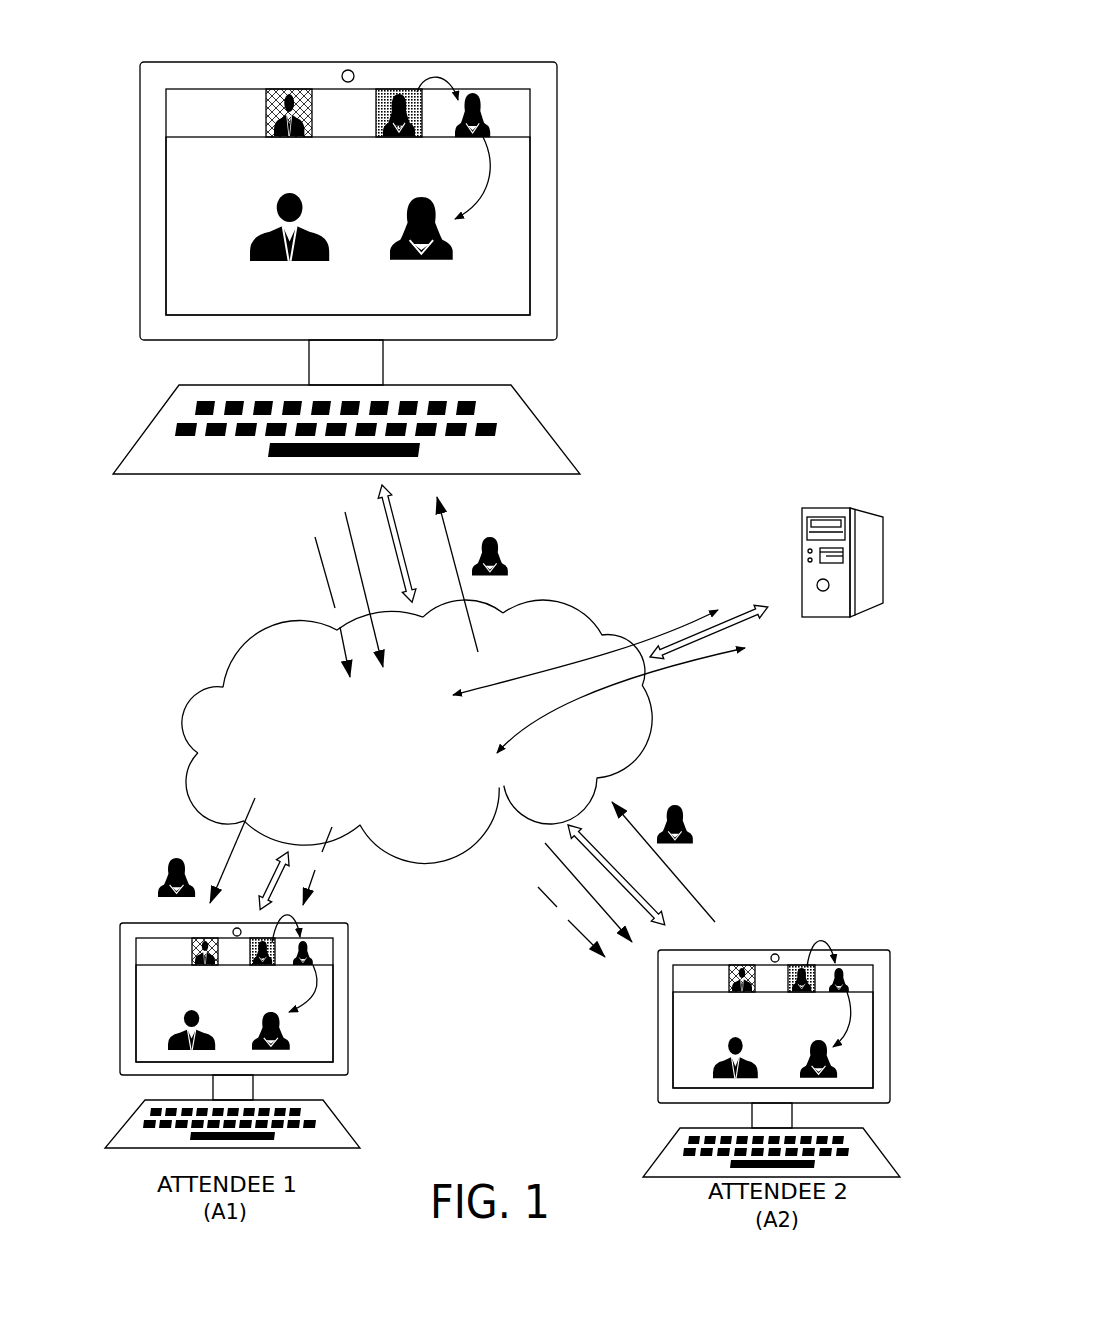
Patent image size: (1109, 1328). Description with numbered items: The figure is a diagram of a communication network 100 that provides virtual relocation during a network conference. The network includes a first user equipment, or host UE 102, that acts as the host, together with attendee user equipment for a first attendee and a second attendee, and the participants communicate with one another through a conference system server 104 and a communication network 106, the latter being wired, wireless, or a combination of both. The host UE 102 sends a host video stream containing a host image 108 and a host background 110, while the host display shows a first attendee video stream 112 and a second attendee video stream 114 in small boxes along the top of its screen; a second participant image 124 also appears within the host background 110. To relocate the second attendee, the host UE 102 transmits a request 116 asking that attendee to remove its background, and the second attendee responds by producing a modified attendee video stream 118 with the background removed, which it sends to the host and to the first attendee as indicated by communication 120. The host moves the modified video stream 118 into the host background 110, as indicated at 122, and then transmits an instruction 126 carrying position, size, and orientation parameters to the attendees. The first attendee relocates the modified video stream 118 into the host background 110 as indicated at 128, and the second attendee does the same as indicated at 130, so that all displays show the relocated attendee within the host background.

The communication network 100 is at (833, 60).
The host user equipment 102 is at (558, 75).
The conference system server 104 is at (833, 505).
The communication network 106 is at (182, 722).
The host image 108 is at (257, 250).
The host background 110 is at (213, 175).
The attendee A1 video stream 112 is at (277, 100).
The attendee A2 video stream 114 is at (383, 95).
The request 116 is at (560, 862).
The modified attendee video stream 118 is at (473, 100).
The communication 120 is at (447, 527).
The relocation of modified video stream at host 122 is at (490, 190).
The second participant image 124 is at (453, 250).
The instruction 126 is at (557, 907).
The relocation of modified video stream at attendee A1 128 is at (300, 1000).
The relocation of modified video stream at attendee A2 130 is at (838, 1025).